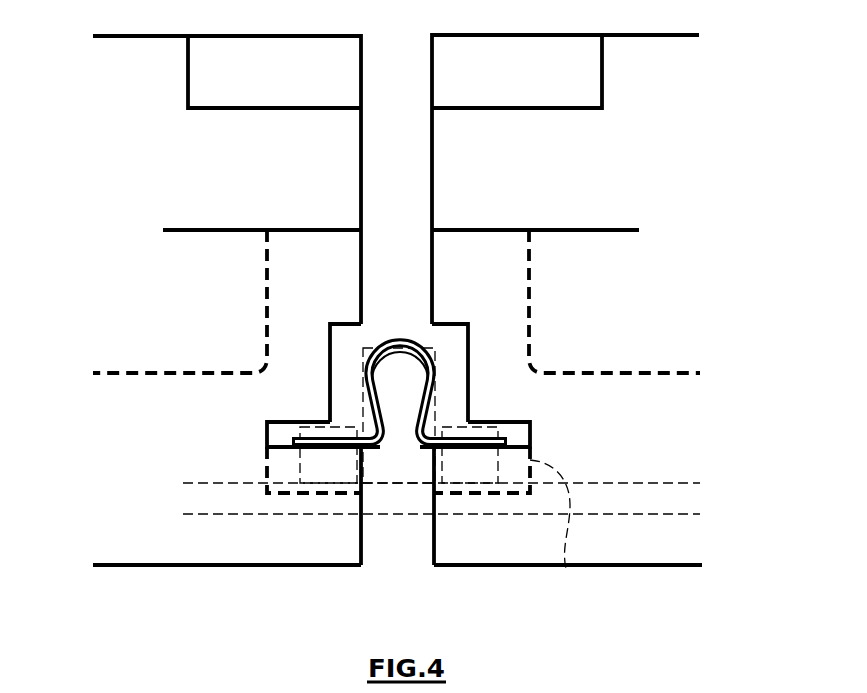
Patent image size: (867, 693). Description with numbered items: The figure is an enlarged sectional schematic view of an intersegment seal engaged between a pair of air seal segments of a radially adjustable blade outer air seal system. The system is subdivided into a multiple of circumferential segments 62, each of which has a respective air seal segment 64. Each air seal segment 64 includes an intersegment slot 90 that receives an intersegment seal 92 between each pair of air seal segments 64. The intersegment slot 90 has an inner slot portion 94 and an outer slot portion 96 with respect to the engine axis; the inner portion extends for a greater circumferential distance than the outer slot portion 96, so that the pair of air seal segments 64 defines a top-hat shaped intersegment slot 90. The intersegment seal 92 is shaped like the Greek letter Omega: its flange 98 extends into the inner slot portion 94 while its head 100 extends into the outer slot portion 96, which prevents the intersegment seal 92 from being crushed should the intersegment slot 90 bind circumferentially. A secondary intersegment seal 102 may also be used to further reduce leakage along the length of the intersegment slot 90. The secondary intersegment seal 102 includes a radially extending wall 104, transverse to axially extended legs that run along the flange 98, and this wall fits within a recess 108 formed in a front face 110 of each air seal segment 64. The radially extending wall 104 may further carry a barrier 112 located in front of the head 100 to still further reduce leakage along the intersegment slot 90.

The circumferential segment 62 is at (405, 204).
The air seal segment 64 is at (136, 580).
The intersegment slot 90 is at (404, 584).
The intersegment seal 92 is at (389, 332).
The inner slot portion 94 is at (265, 436).
The outer slot portion 96 is at (330, 388).
The flange 98 is at (469, 449).
The head 100 is at (428, 348).
The secondary intersegment seal 102 is at (407, 495).
The radially extending wall 104 is at (383, 455).
The recess 108 is at (575, 579).
The front face 110 is at (172, 457).
The barrier 112 is at (436, 356).